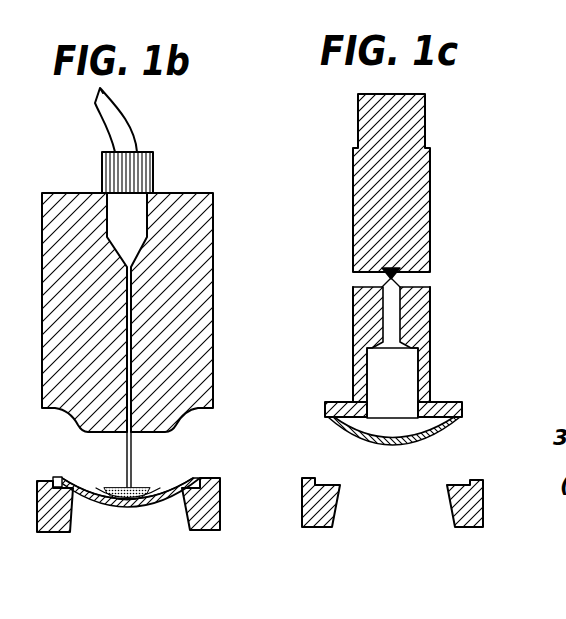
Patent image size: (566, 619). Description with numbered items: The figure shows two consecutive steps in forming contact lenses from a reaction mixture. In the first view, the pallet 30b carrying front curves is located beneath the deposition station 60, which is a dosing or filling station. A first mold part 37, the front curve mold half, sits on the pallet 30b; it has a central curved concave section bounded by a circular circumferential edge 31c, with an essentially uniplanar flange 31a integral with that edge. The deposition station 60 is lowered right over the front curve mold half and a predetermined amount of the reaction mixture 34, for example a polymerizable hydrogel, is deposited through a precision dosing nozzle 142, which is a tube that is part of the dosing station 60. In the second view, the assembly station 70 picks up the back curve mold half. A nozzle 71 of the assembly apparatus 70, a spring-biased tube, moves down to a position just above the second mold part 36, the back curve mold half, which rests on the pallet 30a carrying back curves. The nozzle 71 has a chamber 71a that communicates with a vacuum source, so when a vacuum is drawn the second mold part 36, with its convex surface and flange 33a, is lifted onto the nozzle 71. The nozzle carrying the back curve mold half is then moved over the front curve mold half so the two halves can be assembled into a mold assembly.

In FIG. 1b, the deposition station 60 is at (226, 360).
In FIG. 1b, the flange 31a is at (185, 475).
In FIG. 1b, the circular circumferential edge 31c is at (82, 478).
In FIG. 1b, the first mold part 37 is at (168, 483).
In FIG. 1b, the reaction mixture 34 is at (115, 488).
In FIG. 1b, the precision dosing nozzle 142 is at (133, 438).
In FIG. 1b, the pallet carrying front curves 30b is at (68, 513).
In FIG. 1c, the assembly station 70 is at (452, 246).
In FIG. 1c, the nozzle 71 is at (430, 338).
In FIG. 1c, the chamber 71a is at (395, 388).
In FIG. 1c, the flange 33a is at (447, 418).
In FIG. 1c, the second mold part 36 is at (393, 447).
In FIG. 1c, the pallet carrying back curves 30a is at (325, 505).